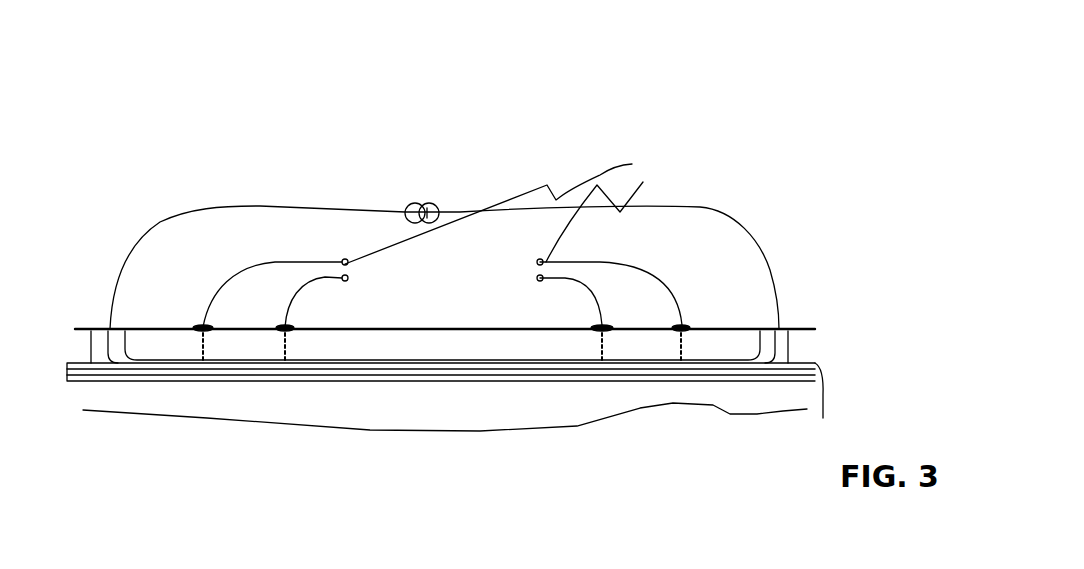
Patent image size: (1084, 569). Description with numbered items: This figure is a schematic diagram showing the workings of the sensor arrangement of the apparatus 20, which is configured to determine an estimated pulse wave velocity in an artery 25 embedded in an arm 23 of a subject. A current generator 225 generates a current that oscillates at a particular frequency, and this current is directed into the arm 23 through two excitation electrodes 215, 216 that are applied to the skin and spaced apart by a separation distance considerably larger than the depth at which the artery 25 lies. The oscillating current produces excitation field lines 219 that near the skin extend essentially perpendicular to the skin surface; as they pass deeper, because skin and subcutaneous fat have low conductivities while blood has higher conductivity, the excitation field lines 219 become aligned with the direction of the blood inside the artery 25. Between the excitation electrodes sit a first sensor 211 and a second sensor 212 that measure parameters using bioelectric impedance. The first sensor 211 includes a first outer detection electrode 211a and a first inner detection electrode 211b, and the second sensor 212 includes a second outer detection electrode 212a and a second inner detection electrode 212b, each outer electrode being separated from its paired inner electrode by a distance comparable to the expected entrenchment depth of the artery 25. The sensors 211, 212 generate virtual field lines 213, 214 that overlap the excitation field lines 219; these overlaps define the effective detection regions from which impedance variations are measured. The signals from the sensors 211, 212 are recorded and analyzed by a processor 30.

The apparatus 20 is at (768, 142).
The first sensor 211 is at (254, 275).
The first outer detection electrode 211a is at (197, 323).
The first inner detection electrode 211b is at (278, 320).
The second sensor 212 is at (655, 303).
The second outer detection electrode 212a is at (684, 325).
The second inner detection electrode 212b is at (605, 322).
The virtual field lines 213 is at (290, 347).
The virtual field lines 214 is at (600, 350).
The excitation electrode 215 is at (96, 314).
The excitation electrode 216 is at (786, 311).
The excitation field lines 219 is at (124, 396).
The arm 23 is at (572, 404).
The artery 25 is at (82, 372).
The processor 30 is at (506, 208).
The current generator 225 is at (418, 206).